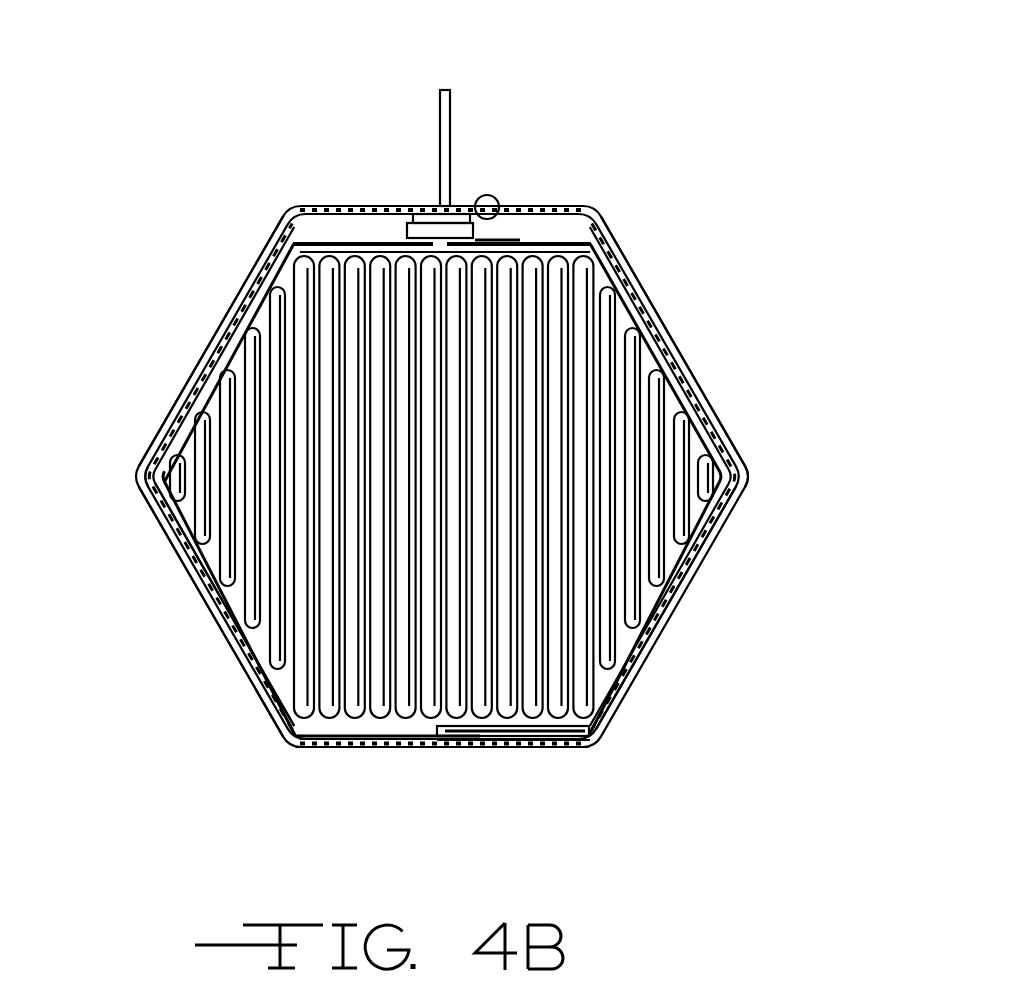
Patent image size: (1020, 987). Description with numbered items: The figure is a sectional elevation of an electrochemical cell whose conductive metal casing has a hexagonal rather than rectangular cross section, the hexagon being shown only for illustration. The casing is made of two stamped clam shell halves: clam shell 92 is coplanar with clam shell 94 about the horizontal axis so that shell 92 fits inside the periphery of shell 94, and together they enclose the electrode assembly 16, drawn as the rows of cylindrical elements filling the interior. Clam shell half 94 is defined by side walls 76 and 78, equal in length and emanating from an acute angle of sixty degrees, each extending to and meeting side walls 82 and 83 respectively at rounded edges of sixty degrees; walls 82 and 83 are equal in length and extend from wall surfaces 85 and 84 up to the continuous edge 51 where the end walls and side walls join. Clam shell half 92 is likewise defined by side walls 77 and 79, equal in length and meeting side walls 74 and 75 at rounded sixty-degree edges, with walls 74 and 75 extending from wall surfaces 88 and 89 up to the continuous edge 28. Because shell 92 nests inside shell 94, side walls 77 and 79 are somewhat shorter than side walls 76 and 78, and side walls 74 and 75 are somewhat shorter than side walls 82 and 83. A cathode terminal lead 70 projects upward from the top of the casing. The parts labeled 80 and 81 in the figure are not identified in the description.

The cathode terminal lead 70 is at (453, 86).
The cover plate 81 is at (333, 232).
The side wall 82 is at (418, 196).
The wall surface 85 is at (243, 264).
The side wall 74 is at (538, 183).
The continuous edge 28 is at (493, 213).
The housing corner 80 is at (614, 231).
The wall surface 88 is at (642, 274).
The electrode assembly 16 is at (637, 407).
The side wall 79 is at (722, 414).
The clam shell 92 is at (759, 454).
The wall surface 89 is at (730, 515).
The side wall 77 is at (687, 602).
The side wall 75 is at (527, 750).
The continuous edge 51 is at (500, 742).
The side wall 83 is at (345, 745).
The side wall 78 is at (240, 676).
The wall surface 84 is at (147, 513).
The clam shell 94 is at (137, 463).
The side wall 76 is at (181, 375).